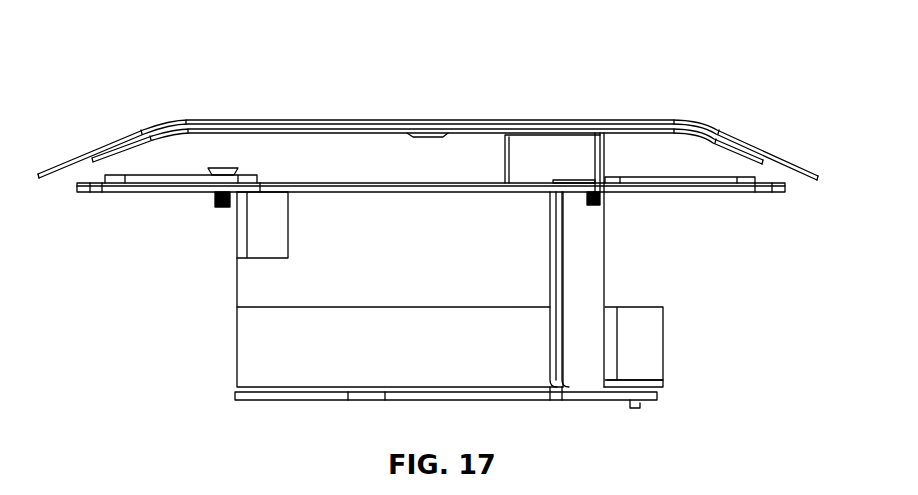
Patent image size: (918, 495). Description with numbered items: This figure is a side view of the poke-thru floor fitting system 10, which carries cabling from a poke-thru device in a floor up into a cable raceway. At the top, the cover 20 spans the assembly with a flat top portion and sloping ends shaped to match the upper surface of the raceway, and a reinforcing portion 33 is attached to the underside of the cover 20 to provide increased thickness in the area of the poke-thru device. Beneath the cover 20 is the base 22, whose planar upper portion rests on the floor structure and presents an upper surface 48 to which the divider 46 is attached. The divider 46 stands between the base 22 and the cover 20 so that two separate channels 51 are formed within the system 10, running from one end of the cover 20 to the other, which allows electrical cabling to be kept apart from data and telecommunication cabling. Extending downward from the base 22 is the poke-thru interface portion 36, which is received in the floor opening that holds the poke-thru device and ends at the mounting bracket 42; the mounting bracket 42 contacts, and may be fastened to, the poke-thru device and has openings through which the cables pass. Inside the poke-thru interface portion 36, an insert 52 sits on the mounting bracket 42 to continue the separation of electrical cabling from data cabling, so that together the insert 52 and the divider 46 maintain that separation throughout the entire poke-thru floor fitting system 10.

The poke-thru floor fitting system 10 is at (151, 52).
The cover 20 is at (157, 120).
The base 22 is at (83, 195).
The reinforcing portion 33 is at (88, 163).
The poke-thru interface portion 36 is at (607, 262).
The mounting bracket 42 is at (238, 398).
The divider 46 is at (520, 143).
The upper surface 48 is at (177, 177).
The channels 51 is at (357, 153).
The insert 52 is at (237, 350).